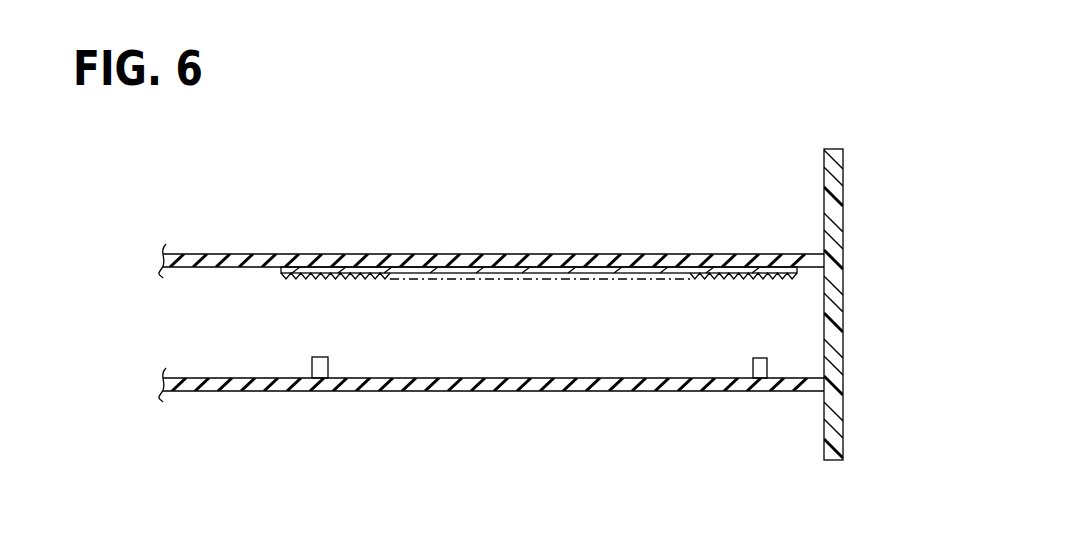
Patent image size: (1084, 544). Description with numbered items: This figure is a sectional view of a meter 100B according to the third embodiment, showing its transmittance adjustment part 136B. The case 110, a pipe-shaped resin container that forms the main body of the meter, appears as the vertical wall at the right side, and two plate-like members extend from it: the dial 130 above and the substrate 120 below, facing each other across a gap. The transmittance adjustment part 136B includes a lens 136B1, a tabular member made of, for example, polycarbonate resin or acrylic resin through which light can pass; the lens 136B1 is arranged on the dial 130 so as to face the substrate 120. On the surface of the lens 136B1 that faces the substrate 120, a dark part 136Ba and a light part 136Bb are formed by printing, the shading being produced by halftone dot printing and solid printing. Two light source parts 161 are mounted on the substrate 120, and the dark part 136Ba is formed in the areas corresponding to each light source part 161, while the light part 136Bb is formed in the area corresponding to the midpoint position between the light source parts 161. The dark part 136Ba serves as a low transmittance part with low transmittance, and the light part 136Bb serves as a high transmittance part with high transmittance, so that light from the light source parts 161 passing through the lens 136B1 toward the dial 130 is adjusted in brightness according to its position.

The meter 100B is at (284, 224).
The case 110 is at (843, 303).
The substrate 120 is at (214, 392).
The dial 130 is at (211, 253).
The transmittance adjustment part 136B is at (497, 271).
The lens 136B1 is at (353, 266).
The dark part 136Ba is at (331, 279).
The light part 136Bb is at (542, 280).
The light source part 161 is at (328, 371).